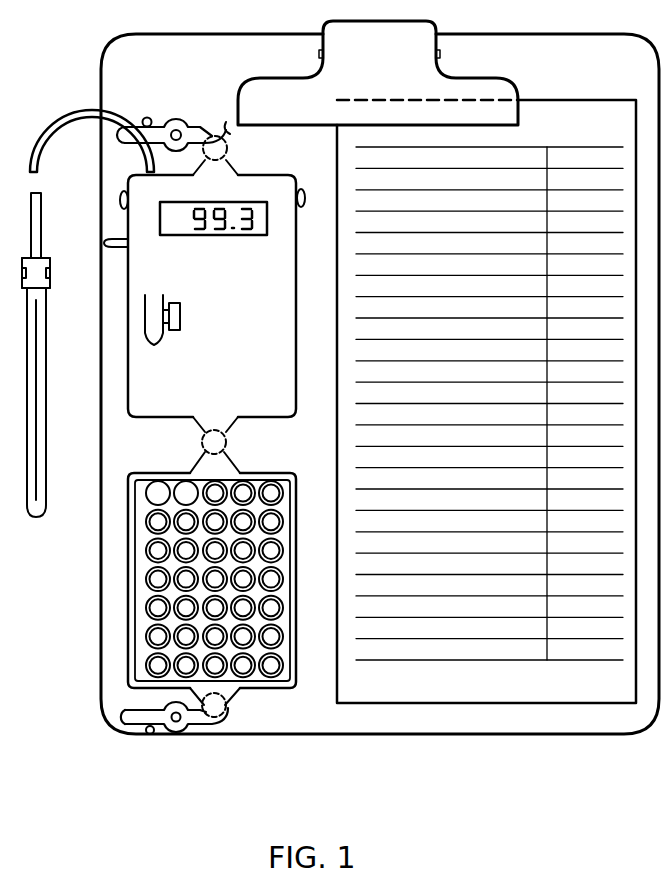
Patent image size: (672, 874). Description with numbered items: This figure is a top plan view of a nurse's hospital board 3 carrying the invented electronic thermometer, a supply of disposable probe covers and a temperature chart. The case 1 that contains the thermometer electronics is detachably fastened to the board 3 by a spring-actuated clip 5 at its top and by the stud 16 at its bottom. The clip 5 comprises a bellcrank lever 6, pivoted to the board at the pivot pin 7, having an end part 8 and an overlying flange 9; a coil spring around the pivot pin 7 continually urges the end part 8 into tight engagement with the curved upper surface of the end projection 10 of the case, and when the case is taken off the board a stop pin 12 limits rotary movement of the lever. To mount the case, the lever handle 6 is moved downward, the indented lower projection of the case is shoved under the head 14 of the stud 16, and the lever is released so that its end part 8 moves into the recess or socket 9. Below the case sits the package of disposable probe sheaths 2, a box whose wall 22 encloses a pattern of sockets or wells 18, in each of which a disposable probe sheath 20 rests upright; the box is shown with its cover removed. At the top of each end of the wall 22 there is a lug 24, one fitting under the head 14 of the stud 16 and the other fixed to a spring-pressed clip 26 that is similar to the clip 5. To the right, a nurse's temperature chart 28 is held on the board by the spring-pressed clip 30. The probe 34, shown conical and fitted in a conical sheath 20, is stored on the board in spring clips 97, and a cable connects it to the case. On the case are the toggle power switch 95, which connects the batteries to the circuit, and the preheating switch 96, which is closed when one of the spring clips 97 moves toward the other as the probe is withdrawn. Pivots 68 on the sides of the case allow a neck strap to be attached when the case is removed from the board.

The case 1 is at (218, 354).
The package of disposable probe sheaths 2 is at (302, 553).
The nurse's hospital board 3 is at (601, 87).
The spring-actuated clip 5 is at (210, 88).
The bellcrank lever 6 is at (132, 148).
The pivot pin 7 is at (180, 98).
The end part 8 is at (229, 117).
The overlying flange 9 is at (214, 166).
The end projection 10 is at (228, 155).
The stop pin 12 is at (148, 117).
The head 14 is at (216, 430).
The stud 16 is at (212, 418).
The sockets or wells 18 is at (160, 480).
The disposable probe sheath 20 is at (50, 340).
The wall 22 is at (178, 567).
The lug 24 is at (232, 458).
The spring-pressed clip 26 is at (230, 715).
The nurse's temperature chart 28 is at (585, 131).
The spring-pressed clip 30 is at (392, 68).
The probe 34 is at (52, 260).
The pivots 68 is at (306, 200).
The toggle switch 95 is at (112, 238).
The preheating switch 96 is at (180, 310).
The spring clips 97 is at (154, 345).